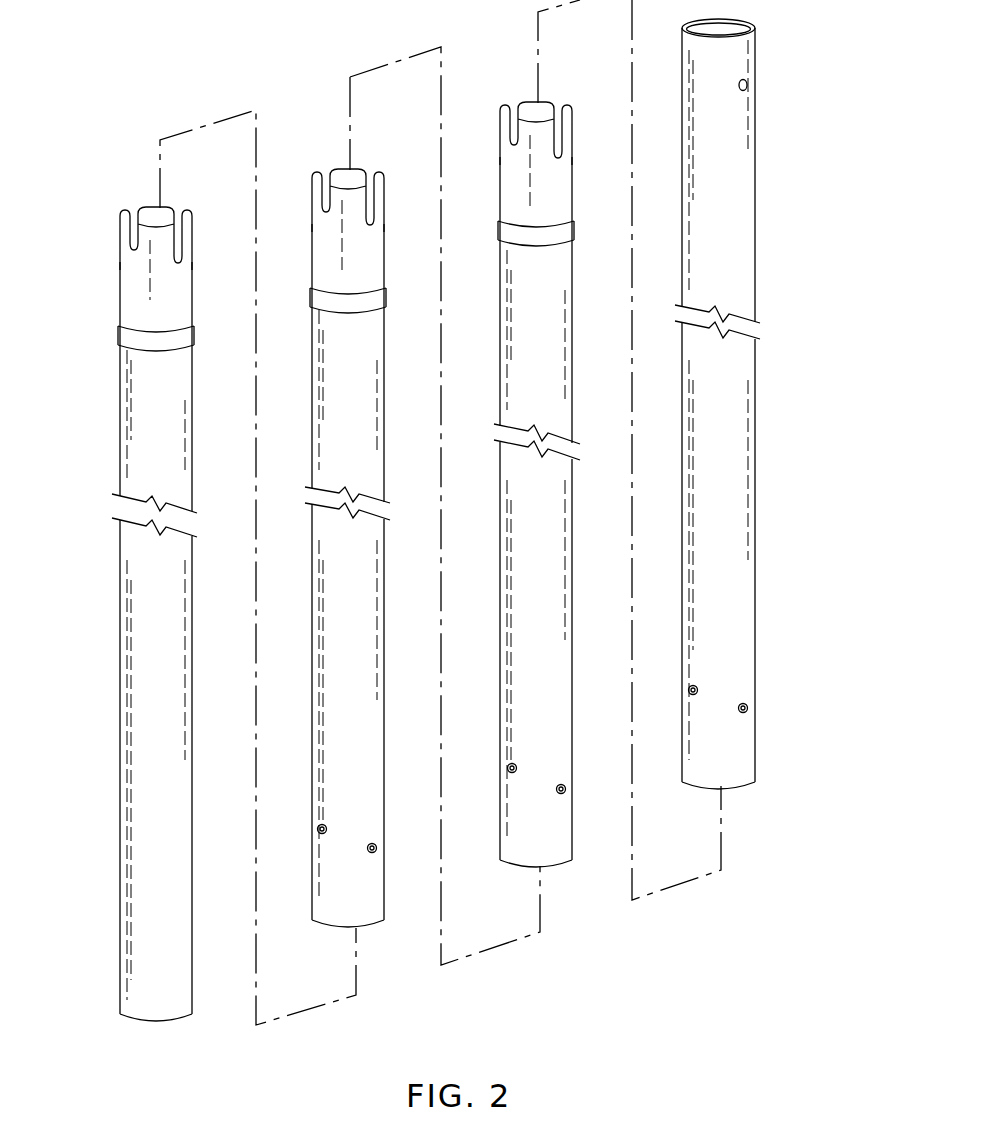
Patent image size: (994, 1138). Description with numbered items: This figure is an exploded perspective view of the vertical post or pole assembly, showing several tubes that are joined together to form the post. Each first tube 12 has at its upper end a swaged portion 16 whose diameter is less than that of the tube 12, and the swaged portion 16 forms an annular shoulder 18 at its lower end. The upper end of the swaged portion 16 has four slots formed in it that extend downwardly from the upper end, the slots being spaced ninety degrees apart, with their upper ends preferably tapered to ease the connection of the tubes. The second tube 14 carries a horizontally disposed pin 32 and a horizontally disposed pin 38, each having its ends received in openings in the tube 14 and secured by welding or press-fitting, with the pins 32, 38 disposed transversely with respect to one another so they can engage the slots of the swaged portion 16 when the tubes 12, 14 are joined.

The first tube 12 is at (598, 348).
The second tube 14 is at (380, 665).
The swaged portion 16 is at (82, 290).
The annular shoulder 18 is at (132, 339).
The pin 32 is at (382, 838).
The pin 38 is at (315, 823).